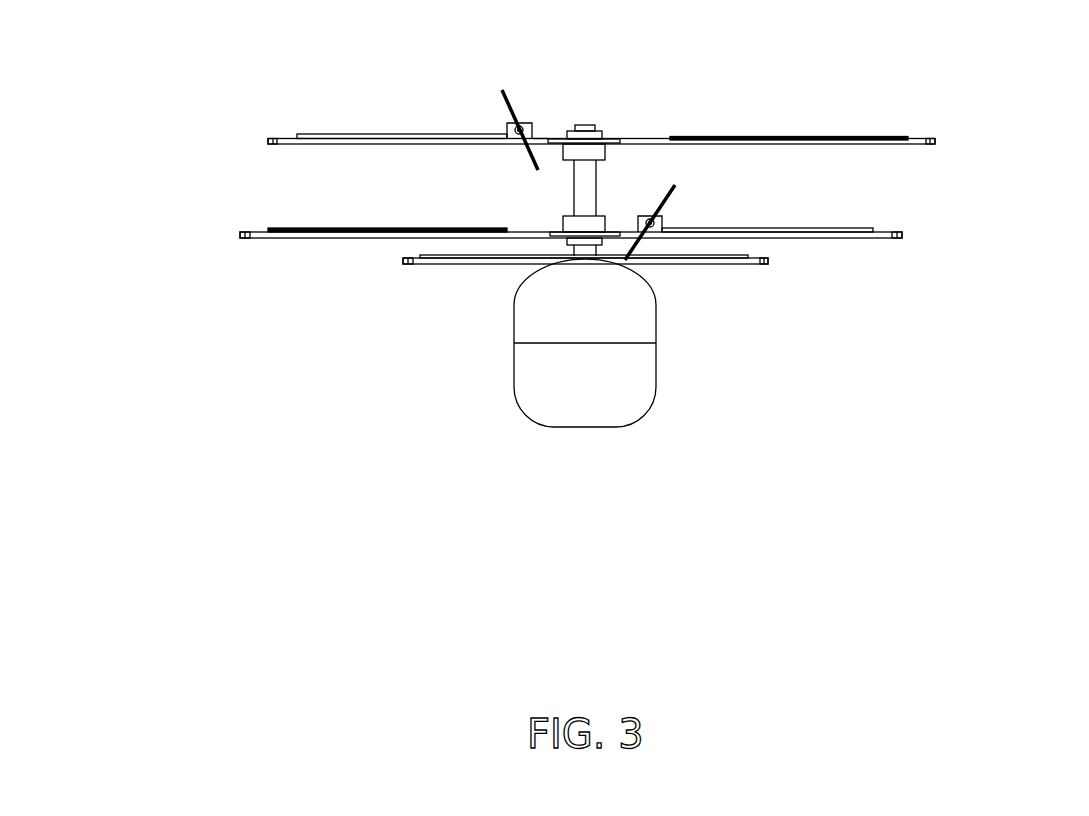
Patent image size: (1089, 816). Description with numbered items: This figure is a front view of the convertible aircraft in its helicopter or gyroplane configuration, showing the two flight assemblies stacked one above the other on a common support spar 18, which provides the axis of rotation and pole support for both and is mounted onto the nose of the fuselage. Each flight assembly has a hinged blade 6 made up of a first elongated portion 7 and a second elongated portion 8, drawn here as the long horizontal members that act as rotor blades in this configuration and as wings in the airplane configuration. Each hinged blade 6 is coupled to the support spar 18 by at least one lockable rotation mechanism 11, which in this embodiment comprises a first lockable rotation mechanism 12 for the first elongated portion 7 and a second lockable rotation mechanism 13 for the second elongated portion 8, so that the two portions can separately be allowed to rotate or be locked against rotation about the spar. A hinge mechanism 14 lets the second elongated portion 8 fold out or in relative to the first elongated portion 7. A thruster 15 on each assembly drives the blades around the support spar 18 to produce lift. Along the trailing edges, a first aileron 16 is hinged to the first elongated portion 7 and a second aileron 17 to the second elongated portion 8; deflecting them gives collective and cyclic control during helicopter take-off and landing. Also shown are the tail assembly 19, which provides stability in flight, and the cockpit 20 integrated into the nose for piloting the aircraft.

The hinged blade 6 is at (591, 212).
The first elongated portion 7 is at (268, 141).
The second elongated portion 8 is at (936, 142).
The lockable rotation mechanism 11 is at (593, 183).
The first lockable rotation mechanism 12 is at (600, 150).
The second lockable rotation mechanism 13 is at (598, 127).
The hinge mechanism 14 is at (601, 187).
The thruster 15 is at (520, 127).
The first aileron 16 is at (405, 136).
The second aileron 17 is at (757, 137).
The support spar 18 is at (596, 189).
The tail assembly 19 is at (403, 262).
The cockpit 20 is at (522, 314).